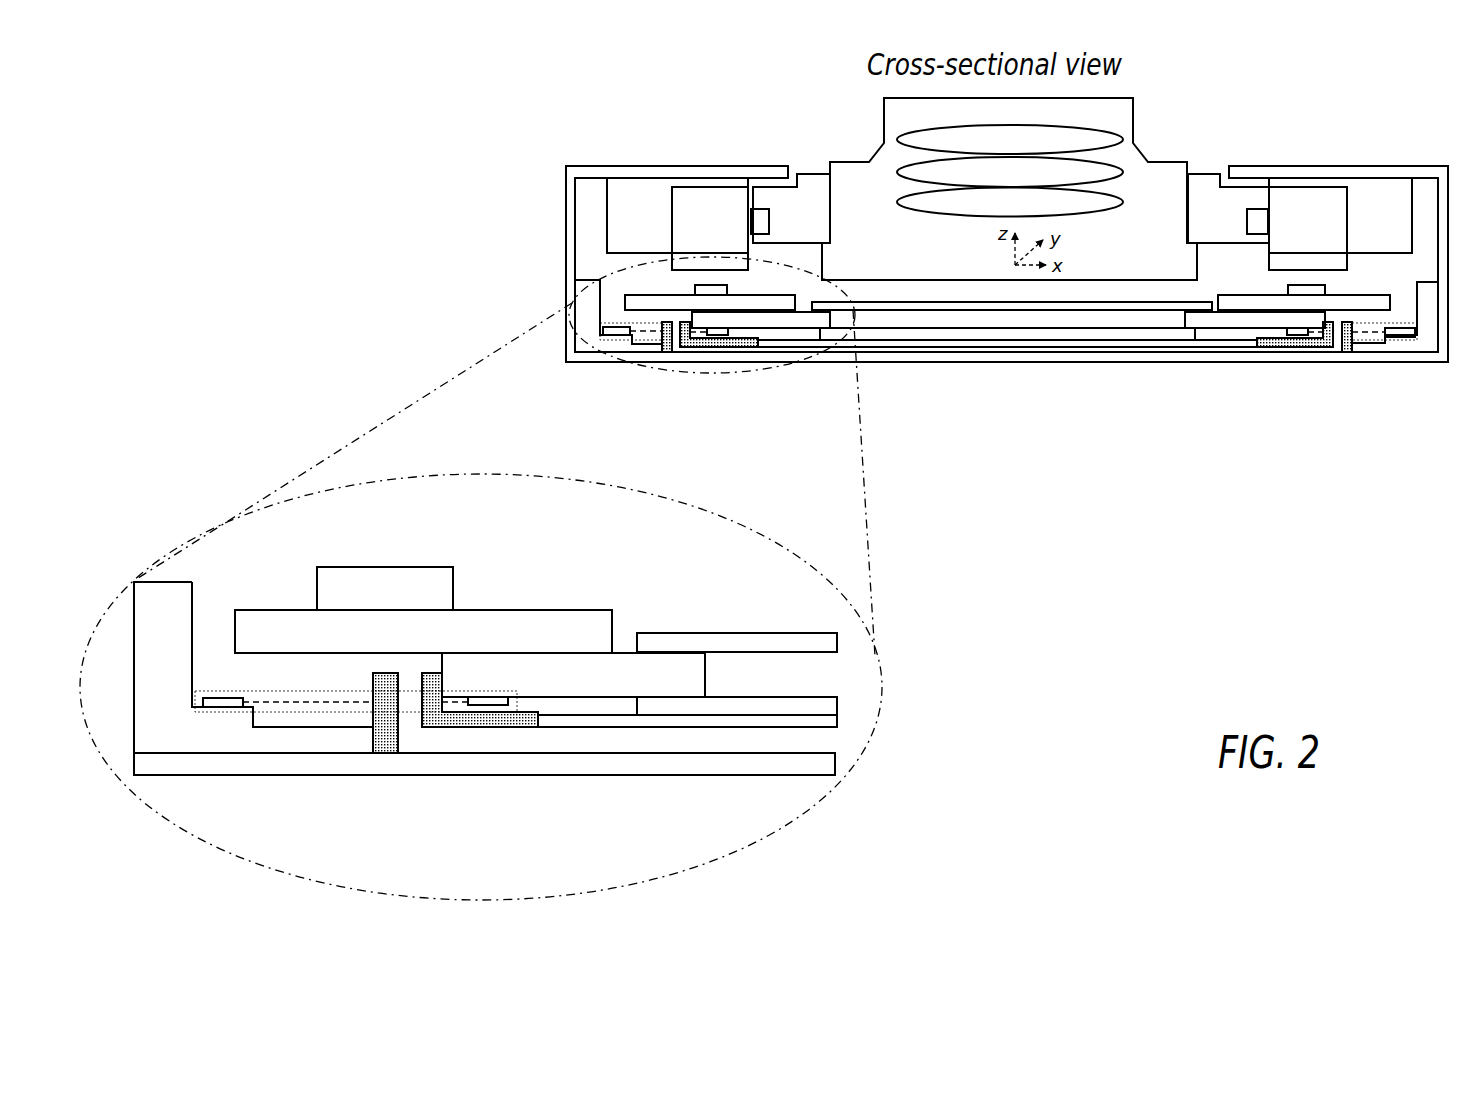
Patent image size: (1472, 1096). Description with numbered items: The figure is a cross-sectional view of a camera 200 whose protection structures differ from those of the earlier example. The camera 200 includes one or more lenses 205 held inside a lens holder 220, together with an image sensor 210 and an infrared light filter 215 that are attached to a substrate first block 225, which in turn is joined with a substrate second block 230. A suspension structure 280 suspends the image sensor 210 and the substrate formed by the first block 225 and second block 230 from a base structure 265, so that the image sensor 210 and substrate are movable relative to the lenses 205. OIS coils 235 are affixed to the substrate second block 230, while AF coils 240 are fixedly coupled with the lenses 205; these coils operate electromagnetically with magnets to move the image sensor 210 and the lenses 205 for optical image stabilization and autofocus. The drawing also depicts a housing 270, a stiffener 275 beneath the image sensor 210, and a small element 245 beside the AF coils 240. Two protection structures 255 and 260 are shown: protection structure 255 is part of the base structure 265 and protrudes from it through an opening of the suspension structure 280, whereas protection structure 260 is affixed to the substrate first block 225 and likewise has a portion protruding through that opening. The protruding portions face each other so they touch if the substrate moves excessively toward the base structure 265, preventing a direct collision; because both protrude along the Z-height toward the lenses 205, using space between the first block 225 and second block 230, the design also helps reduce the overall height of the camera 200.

The camera 200 is at (620, 133).
The lenses 205 is at (1120, 131).
The image sensor 210 is at (1043, 335).
The infrared light filter 215 is at (955, 310).
The lens holder 220 is at (881, 247).
The substrate first block 225 is at (1210, 322).
The substrate second block 230 is at (1244, 297).
The OIS coils 235 is at (440, 597).
The AF coils 240 is at (1322, 235).
The position sensor 245 is at (1247, 221).
The protection structure 255 is at (1349, 350).
The protection structure 260 is at (1281, 345).
The base structure 265 is at (1433, 343).
The housing 270 is at (1431, 171).
The stiffener 275 is at (1142, 343).
The suspension structure 280 is at (1408, 325).